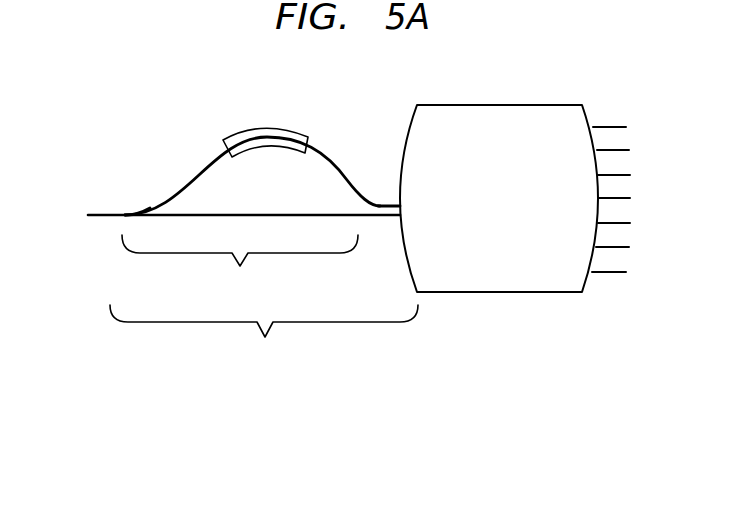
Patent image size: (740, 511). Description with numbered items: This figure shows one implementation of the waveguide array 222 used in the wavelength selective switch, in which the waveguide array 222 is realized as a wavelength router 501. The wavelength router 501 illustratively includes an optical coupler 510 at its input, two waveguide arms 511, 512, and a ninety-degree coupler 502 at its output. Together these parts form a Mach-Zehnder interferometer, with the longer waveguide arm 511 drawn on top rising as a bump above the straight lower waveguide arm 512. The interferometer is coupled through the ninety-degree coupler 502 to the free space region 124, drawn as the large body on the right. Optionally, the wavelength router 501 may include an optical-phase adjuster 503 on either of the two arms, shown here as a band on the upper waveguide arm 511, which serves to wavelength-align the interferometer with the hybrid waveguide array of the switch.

The free space region 124 is at (512, 208).
The waveguide array 222 is at (264, 338).
The wavelength router 501 is at (240, 268).
The 90 degree coupler 502 is at (384, 206).
The optical-phase adjuster 503 is at (265, 125).
The optical coupler 510 is at (123, 214).
The waveguide arm 511 is at (210, 163).
The waveguide arm 512 is at (180, 215).